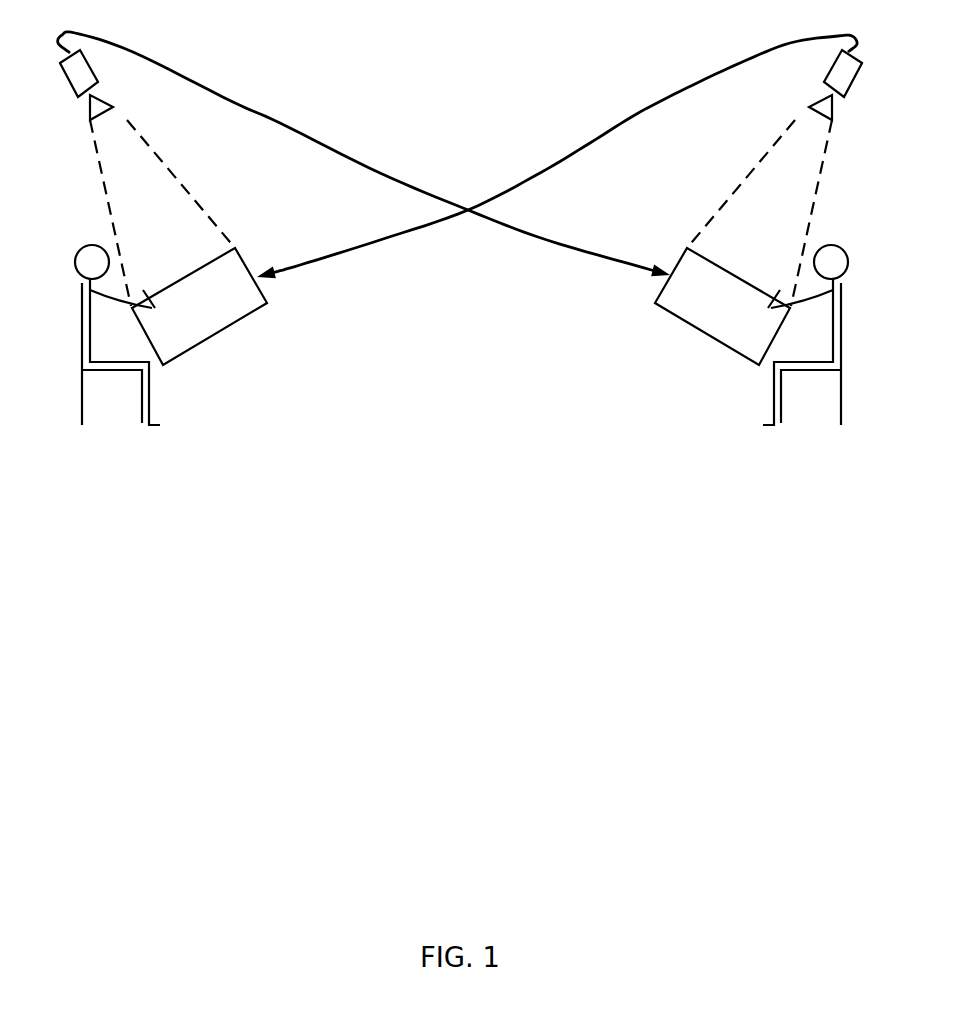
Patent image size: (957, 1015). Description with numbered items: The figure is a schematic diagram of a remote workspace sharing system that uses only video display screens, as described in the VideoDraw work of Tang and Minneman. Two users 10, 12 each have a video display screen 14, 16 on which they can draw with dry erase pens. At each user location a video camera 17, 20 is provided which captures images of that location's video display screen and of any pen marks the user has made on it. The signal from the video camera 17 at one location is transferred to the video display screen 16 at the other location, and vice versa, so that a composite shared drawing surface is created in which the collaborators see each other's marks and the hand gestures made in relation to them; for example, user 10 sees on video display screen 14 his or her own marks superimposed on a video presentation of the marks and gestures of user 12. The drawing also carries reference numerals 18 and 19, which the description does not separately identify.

The user 10 is at (90, 337).
The user 12 is at (832, 327).
The video display screen 14 is at (217, 335).
The video display screen 16 is at (705, 335).
The video camera 17 is at (70, 83).
The camera 18 is at (853, 83).
The video transmission link 19 is at (233, 102).
The video camera 20 is at (695, 85).